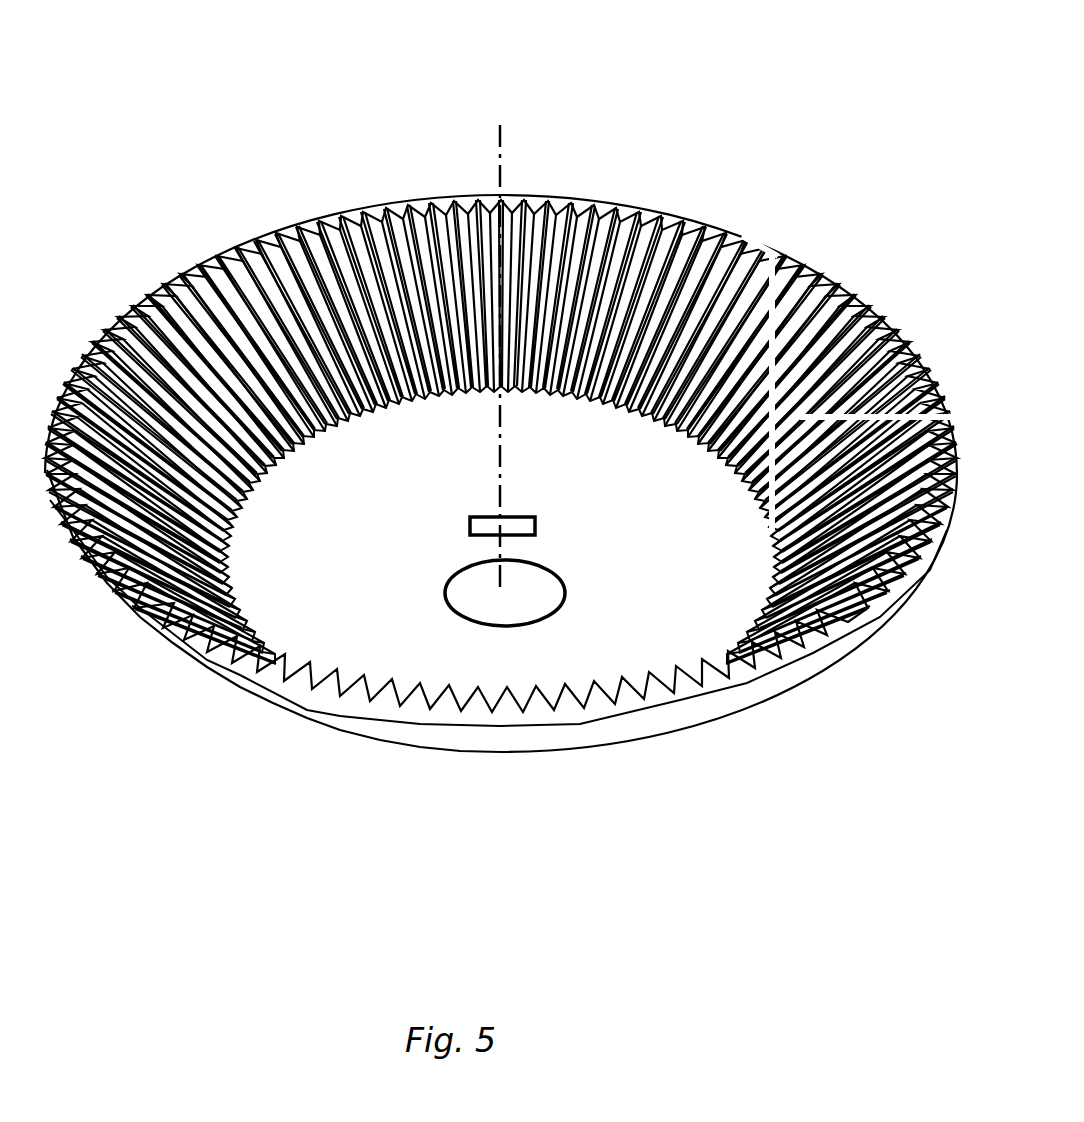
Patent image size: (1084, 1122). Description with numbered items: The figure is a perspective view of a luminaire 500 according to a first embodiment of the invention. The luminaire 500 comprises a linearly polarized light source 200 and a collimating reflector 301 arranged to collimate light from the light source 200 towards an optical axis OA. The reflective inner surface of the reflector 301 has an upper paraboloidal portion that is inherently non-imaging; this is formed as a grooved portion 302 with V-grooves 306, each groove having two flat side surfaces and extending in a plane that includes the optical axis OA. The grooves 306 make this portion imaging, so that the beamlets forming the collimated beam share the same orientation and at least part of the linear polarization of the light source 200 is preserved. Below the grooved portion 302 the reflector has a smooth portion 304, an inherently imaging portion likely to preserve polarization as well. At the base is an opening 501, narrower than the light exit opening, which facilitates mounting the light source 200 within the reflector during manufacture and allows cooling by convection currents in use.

The luminaire 500 is at (563, 142).
The optical axis OA is at (497, 167).
The collimating reflector 301 is at (246, 278).
The grooved portion 302 is at (133, 383).
The grooves 306 is at (693, 267).
The smooth portion 304 is at (617, 658).
The linearly polarized light source 200 is at (470, 526).
The opening 501 is at (463, 618).